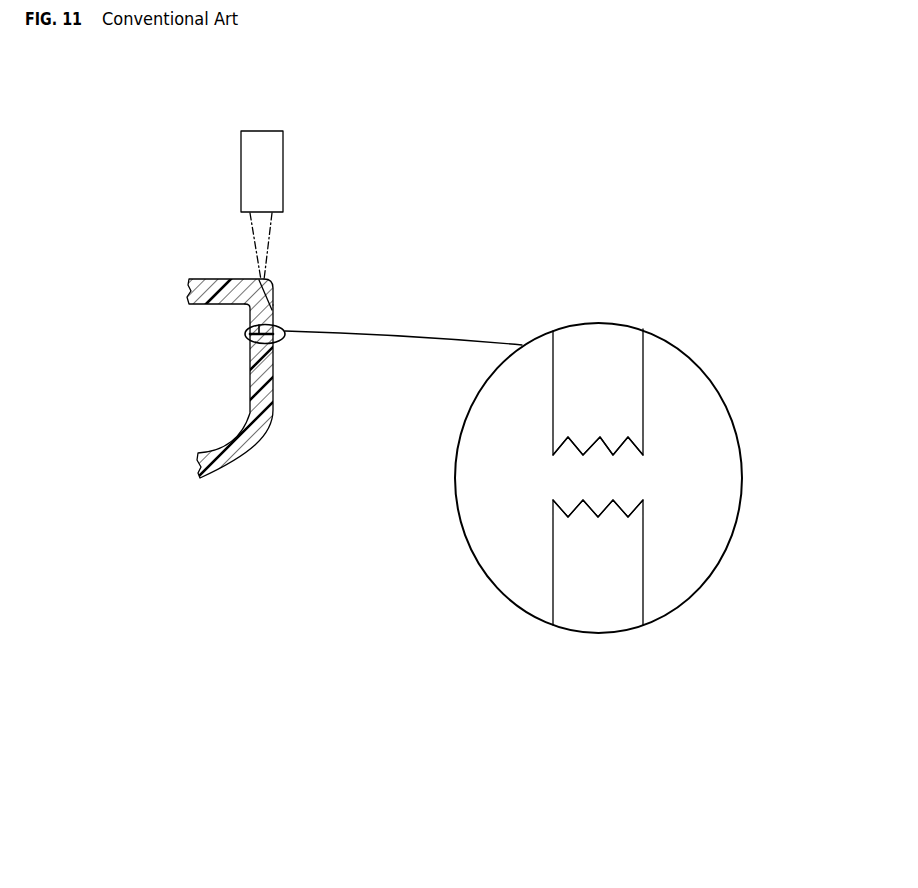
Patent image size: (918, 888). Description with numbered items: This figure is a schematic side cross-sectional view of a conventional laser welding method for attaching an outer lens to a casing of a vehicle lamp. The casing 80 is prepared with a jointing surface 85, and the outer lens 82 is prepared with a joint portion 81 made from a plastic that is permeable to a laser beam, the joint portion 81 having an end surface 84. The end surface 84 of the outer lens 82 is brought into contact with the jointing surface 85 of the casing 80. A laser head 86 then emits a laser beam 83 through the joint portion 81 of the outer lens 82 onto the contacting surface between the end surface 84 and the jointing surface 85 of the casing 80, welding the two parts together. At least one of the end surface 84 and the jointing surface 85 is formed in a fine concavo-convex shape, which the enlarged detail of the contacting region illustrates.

The casing 80 is at (260, 430).
The joint portion 81 is at (270, 307).
The outer lens 82 is at (212, 283).
The laser beam 83 is at (272, 243).
The end surface 84 is at (286, 337).
The jointing surface 85 is at (620, 510).
The laser head 86 is at (277, 161).